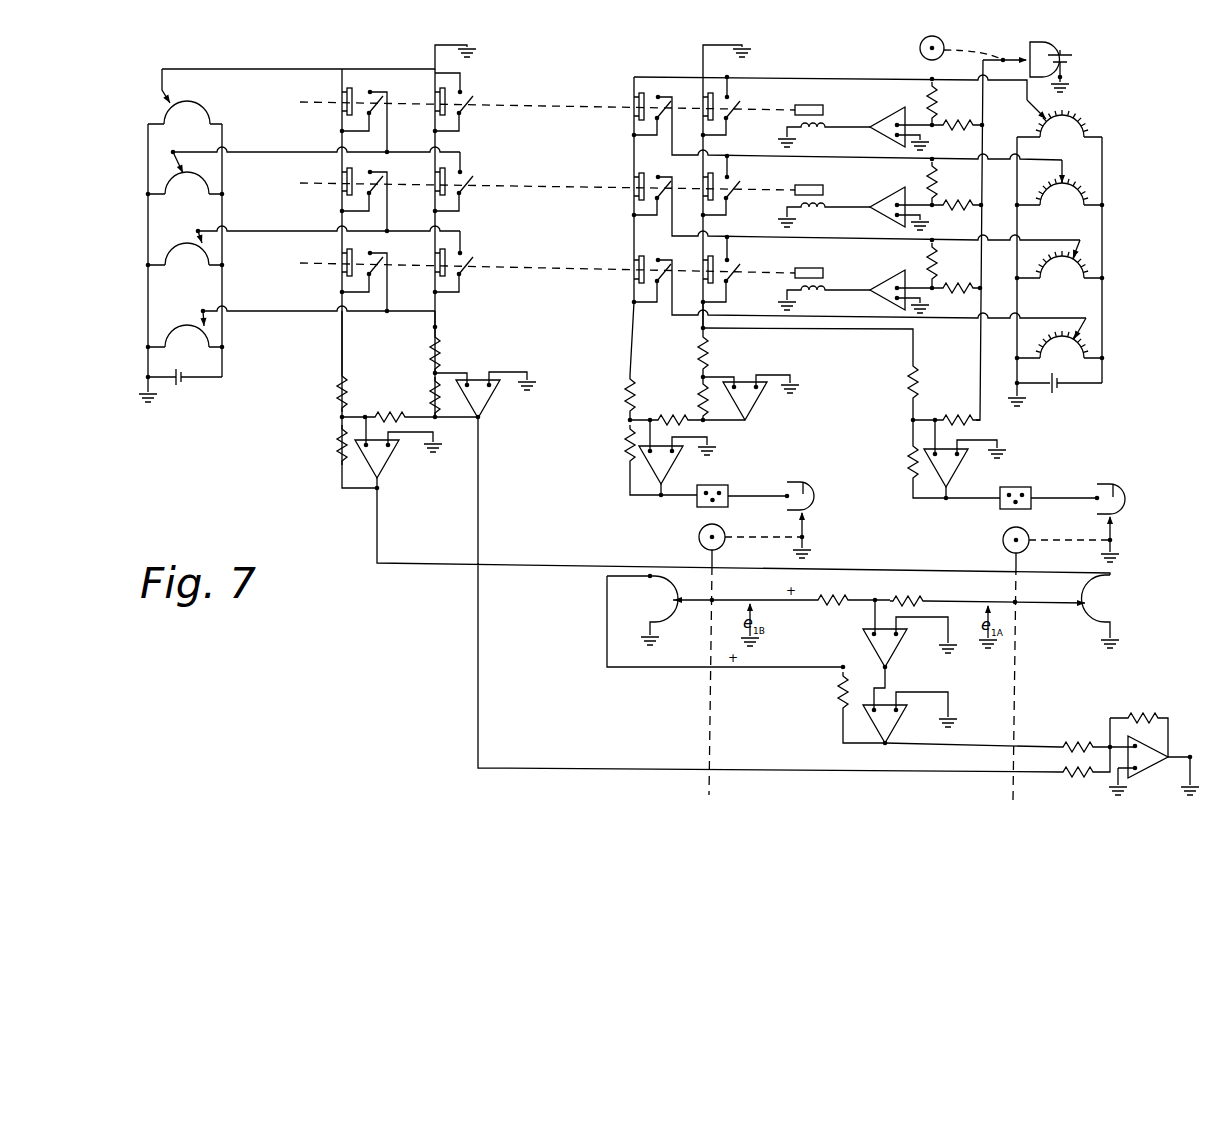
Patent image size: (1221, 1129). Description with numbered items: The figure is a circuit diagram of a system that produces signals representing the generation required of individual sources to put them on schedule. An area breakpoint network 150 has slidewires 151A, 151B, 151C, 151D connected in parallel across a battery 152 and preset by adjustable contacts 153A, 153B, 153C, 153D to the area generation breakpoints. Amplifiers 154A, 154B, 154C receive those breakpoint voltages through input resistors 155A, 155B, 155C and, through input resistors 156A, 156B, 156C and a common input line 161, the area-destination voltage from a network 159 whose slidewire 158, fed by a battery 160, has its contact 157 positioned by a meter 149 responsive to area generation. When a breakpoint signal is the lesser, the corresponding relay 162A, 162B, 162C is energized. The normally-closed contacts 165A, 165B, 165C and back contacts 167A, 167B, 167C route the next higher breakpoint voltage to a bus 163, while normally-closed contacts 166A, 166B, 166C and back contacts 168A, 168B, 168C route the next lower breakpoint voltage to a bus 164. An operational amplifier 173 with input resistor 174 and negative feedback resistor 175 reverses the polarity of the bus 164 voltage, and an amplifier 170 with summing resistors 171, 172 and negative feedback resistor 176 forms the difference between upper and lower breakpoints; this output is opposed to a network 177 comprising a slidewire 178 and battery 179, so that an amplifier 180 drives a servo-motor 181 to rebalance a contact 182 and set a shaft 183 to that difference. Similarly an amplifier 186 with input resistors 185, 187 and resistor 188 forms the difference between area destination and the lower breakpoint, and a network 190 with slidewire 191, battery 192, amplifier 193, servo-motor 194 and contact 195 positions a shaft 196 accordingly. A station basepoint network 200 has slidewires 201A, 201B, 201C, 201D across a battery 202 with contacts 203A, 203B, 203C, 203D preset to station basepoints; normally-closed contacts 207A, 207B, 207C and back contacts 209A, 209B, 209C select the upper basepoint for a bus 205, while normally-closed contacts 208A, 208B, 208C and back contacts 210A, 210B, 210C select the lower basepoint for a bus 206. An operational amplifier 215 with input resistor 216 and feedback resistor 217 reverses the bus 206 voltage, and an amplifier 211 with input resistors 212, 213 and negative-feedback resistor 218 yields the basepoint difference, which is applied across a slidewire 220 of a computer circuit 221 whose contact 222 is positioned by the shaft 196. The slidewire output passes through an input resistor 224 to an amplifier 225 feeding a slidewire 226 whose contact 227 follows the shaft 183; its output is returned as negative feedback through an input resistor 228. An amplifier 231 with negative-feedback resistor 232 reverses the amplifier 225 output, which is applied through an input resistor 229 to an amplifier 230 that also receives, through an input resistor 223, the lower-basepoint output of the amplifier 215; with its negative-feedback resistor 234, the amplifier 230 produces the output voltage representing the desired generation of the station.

The meter 149 is at (920, 44).
The area breakpoint network 150 is at (1068, 229).
The slidewire 151A is at (1088, 132).
The slidewire 151B is at (1088, 200).
The slidewire 151C is at (1088, 276).
The slidewire 151D is at (1088, 355).
The battery 152 is at (1058, 390).
The adjustable contact 153A is at (1028, 118).
The adjustable contact 153B is at (1080, 160).
The adjustable contact 153C is at (1085, 248).
The adjustable contact 153D is at (1090, 322).
The amplifier 154A is at (882, 120).
The amplifier 154B is at (882, 200).
The amplifier 154C is at (882, 282).
The input resistor 155A is at (935, 105).
The input resistor 155B is at (935, 185).
The input resistor 155C is at (935, 265).
The input resistor 156A is at (960, 130).
The input resistor 156B is at (960, 211).
The input resistor 156C is at (960, 292).
The contact 157 is at (1005, 58).
The slidewire 158 is at (1030, 70).
The network 159 is at (1069, 70).
The battery 160 is at (1065, 53).
The input line 161 is at (980, 362).
The relay 162A is at (845, 153).
The relay 162B is at (845, 227).
The relay 162C is at (840, 311).
The bus 163 is at (630, 338).
The bus 164 is at (700, 326).
The normally-closed contacts 165A is at (638, 99).
The normally-closed contacts 165B is at (638, 180).
The normally-closed contacts 165C is at (638, 258).
The normally-closed contacts 166A is at (707, 96).
The normally-closed contacts 166B is at (707, 182).
The normally-closed contacts 166C is at (707, 262).
The back contacts 167A is at (656, 96).
The back contacts 167B is at (660, 174).
The back contacts 167C is at (660, 257).
The back contacts 168A is at (729, 99).
The back contacts 168B is at (729, 180).
The back contacts 168C is at (729, 258).
The operational amplifier 170 is at (672, 458).
The input or summing resistor 171 is at (628, 400).
The input or summing resistor 172 is at (662, 415).
The operational amplifier 173 is at (752, 412).
The input resistor 174 is at (708, 352).
The negative feedback resistor 175 is at (700, 395).
The negative feedback resistor 176 is at (628, 446).
The network 177 is at (815, 496).
The slidewire 178 is at (808, 512).
The battery 179 is at (805, 484).
The amplifier 180 is at (697, 508).
The servo-motor 181 is at (700, 541).
The contact 182 is at (808, 537).
The shaft 183 is at (712, 562).
The input resistor 185 is at (912, 390).
The operational amplifier 186 is at (957, 465).
The input resistor 187 is at (960, 415).
The resistor 188 is at (912, 462).
The network 190 is at (1122, 499).
The slidewire 191 is at (1116, 514).
The battery 192 is at (1115, 486).
The amplifier 193 is at (1000, 508).
The servo-motor 194 is at (1003, 540).
The contact 195 is at (1118, 540).
The shaft 196 is at (1016, 566).
The station basepoint network 200 is at (118, 232).
The slidewire 201A is at (212, 112).
The slidewire 201B is at (212, 184).
The slidewire 201C is at (210, 262).
The slidewire 201D is at (210, 345).
The battery 202 is at (186, 388).
The adjustable contact 203A is at (165, 95).
The adjustable contact 203B is at (178, 160).
The adjustable contact 203C is at (199, 234).
The adjustable contact 203D is at (200, 316).
The bus 205 is at (341, 350).
The bus 206 is at (437, 314).
The normally-closed contacts 207A is at (347, 95).
The normally-closed contacts 207B is at (347, 182).
The normally-closed contacts 207C is at (347, 262).
The normally-closed contacts 208A is at (441, 103).
The normally-closed contacts 208B is at (441, 186).
The normally-closed contacts 208C is at (441, 268).
The back contacts 209A is at (374, 92).
The back contacts 209B is at (372, 172).
The back contacts 209C is at (372, 252).
The back contacts 210A is at (465, 98).
The back contacts 210B is at (465, 180).
The back contacts 210C is at (465, 256).
The operational amplifier 211 is at (385, 470).
The input resistor 212 is at (340, 392).
The input resistor 213 is at (400, 403).
The operational amplifier 215 is at (490, 412).
The input resistor 216 is at (440, 350).
The negative feedback resistor 217 is at (433, 392).
The negative-feedback resistor 218 is at (340, 448).
The slidewire 220 is at (1108, 610).
The computer circuit 221 is at (580, 644).
The contact 222 is at (1050, 605).
The input resistor 223 is at (1076, 774).
The input resistor 224 is at (905, 600).
The amplifier 225 is at (898, 650).
The slidewire 226 is at (662, 588).
The contact 227 is at (693, 605).
The input resistor 228 is at (832, 600).
The input resistor 229 is at (1072, 746).
The amplifier 230 is at (1150, 770).
The amplifier 231 is at (898, 728).
The negative-feedback resistor 232 is at (842, 725).
The negative-feedback resistor 234 is at (1140, 716).